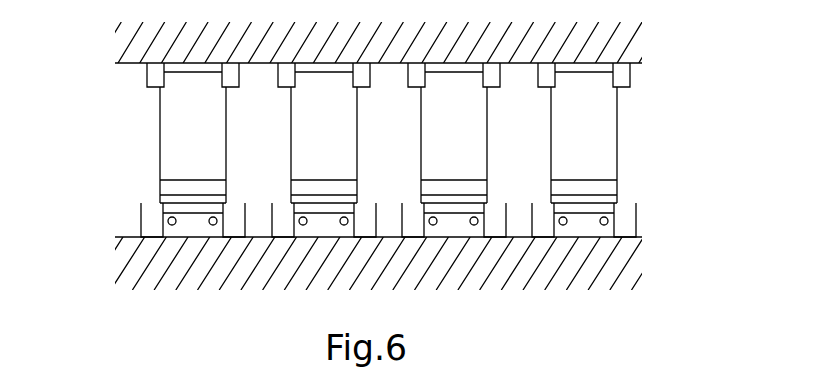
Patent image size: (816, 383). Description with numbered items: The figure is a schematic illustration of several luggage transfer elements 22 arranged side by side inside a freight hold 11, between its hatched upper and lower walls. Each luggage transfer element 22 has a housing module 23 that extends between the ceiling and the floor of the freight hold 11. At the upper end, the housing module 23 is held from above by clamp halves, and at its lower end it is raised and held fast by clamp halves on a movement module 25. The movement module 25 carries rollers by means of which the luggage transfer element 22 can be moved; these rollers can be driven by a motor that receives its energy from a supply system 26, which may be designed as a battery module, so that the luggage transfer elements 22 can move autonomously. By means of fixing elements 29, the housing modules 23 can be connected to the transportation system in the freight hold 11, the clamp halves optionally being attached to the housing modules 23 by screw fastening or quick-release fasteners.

The freight hold 11 is at (640, 102).
The luggage transfer element 22 is at (148, 134).
The housing module 23 is at (592, 128).
The movement module 25 is at (611, 198).
The supply system 26 is at (612, 189).
The fixing element 29 is at (625, 224).